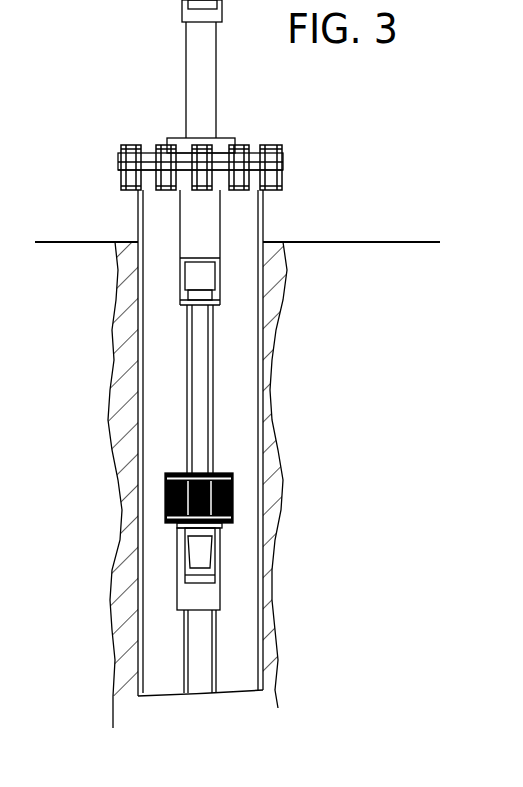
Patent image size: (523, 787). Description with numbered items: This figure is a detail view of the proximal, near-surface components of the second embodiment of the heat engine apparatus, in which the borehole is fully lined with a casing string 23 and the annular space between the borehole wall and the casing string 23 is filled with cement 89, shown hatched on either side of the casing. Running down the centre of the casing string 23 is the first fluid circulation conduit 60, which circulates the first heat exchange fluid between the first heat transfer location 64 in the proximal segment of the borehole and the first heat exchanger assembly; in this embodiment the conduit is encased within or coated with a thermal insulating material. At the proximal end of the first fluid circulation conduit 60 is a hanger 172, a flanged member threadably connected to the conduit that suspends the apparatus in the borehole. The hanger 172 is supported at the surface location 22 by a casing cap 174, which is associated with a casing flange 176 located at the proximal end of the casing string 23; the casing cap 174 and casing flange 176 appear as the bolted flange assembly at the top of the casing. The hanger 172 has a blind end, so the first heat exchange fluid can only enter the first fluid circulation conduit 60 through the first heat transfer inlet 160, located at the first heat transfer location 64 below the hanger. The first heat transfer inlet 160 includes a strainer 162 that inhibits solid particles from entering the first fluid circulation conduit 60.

The surface location 22 is at (283, 232).
The casing string 23 is at (258, 323).
The first fluid circulation conduit 60 is at (200, 408).
The first heat transfer location 64 is at (155, 497).
The cement 89 is at (113, 345).
The first heat transfer inlet 160 is at (155, 513).
The strainer 162 is at (232, 523).
The hanger 172 is at (200, 237).
The casing cap 174 is at (253, 160).
The casing flange 176 is at (247, 175).